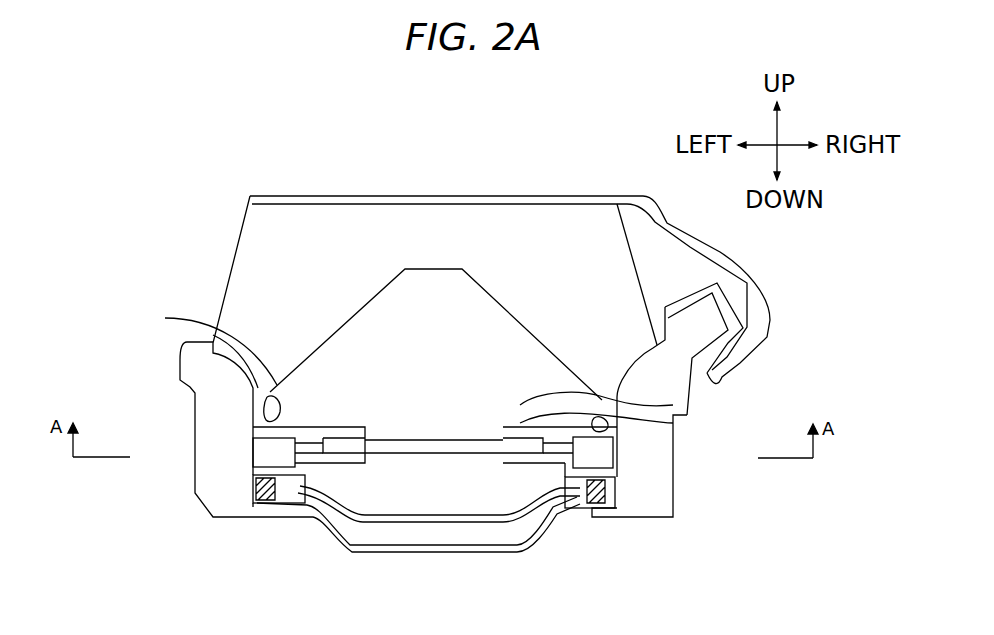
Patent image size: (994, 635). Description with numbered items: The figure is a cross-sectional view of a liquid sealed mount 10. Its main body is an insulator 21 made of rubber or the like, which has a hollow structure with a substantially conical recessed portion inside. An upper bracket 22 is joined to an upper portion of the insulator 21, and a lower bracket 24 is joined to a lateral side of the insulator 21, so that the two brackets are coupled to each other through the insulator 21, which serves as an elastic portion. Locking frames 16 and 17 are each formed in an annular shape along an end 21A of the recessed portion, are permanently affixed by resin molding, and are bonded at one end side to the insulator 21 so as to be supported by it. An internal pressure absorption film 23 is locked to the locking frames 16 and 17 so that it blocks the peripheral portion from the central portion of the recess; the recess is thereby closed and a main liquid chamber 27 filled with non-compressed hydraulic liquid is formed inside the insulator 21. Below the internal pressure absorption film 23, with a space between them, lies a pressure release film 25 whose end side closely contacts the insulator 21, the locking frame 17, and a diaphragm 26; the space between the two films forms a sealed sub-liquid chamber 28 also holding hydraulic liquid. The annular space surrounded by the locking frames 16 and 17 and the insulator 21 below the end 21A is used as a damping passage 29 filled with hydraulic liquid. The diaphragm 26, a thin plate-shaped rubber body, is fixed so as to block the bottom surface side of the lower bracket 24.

The liquid sealed mount 10 is at (431, 114).
The locking frame 16 is at (165, 318).
The locking frame 17 is at (318, 522).
The insulator 21 is at (553, 225).
The end of the recessed portion 21A is at (266, 399).
The upper bracket 22 is at (503, 196).
The internal pressure absorption film 23 is at (688, 406).
The lower bracket 24 is at (198, 412).
The pressure release film 25 is at (483, 522).
The diaphragm 26 is at (396, 555).
The main liquid chamber 27 is at (444, 358).
The sub-liquid chamber 28 is at (444, 497).
The damping passage 29 is at (285, 462).